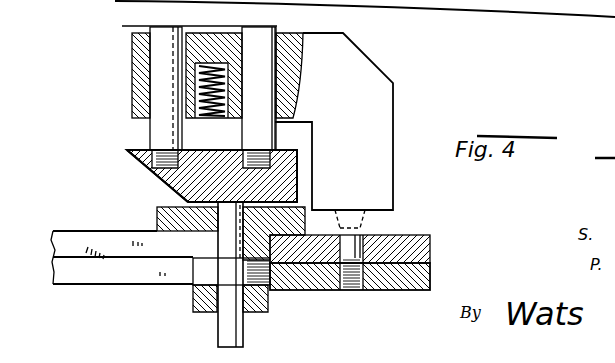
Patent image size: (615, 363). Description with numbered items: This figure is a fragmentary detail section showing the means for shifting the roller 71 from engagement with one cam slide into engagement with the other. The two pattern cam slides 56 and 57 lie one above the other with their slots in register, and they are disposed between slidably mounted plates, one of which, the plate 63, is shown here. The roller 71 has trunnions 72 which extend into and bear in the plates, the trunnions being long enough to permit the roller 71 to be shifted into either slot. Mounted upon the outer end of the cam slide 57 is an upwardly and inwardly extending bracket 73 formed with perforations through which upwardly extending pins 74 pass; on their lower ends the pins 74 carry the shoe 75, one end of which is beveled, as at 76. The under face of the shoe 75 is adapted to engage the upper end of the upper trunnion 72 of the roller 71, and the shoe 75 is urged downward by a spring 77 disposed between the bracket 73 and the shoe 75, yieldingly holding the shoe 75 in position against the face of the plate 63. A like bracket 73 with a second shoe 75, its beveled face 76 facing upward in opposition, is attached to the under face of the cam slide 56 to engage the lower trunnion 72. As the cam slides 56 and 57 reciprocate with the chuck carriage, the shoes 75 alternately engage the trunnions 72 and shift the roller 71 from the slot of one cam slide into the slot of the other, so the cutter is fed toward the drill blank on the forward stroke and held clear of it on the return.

The pattern cam slide 56 is at (406, 290).
The pattern cam slide 57 is at (420, 242).
The slidably mounted plate 63 is at (157, 217).
The roller 71 is at (195, 300).
The trunnion 72 is at (227, 243).
The bracket 73 is at (385, 97).
The pin 74 is at (153, 27).
The shoe 75 is at (288, 172).
The beveled end 76 is at (162, 187).
The spring 77 is at (215, 60).